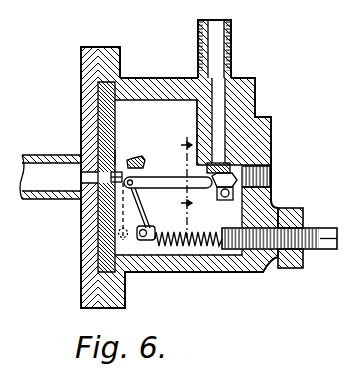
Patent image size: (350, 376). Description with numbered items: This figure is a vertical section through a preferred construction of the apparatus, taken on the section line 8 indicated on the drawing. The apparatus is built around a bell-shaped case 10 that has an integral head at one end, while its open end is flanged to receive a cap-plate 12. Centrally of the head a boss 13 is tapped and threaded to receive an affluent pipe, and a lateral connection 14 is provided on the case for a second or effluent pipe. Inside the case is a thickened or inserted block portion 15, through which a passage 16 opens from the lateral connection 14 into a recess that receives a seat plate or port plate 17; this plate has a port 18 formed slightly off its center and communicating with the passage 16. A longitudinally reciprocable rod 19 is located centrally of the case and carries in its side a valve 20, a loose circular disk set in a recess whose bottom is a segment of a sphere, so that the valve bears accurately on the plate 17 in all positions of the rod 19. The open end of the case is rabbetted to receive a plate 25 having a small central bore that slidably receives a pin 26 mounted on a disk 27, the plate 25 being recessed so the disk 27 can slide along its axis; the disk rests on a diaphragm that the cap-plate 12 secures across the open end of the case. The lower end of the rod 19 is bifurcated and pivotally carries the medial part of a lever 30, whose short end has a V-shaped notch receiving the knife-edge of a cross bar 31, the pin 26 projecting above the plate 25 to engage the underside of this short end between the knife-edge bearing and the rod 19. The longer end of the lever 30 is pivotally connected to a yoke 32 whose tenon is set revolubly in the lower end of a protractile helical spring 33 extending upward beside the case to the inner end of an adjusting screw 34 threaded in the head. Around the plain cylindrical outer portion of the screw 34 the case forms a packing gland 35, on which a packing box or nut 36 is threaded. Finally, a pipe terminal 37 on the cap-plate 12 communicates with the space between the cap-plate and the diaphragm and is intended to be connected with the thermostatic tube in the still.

The section line 8- 8 is at (184, 183).
The bell-shaped case 10 is at (243, 271).
The cap-plate 12 is at (89, 97).
The boss 13 is at (271, 196).
The lateral connection 14 is at (232, 61).
The thickened or inserted block portion 15 is at (193, 118).
The passage 16 is at (232, 126).
The seat plate or port plate 17 is at (240, 157).
The port 18 is at (218, 106).
The longitudinally reciprocable rod 19 is at (178, 178).
The valve 20 is at (218, 192).
The plate 25 is at (104, 117).
The pin 26 is at (121, 168).
The disk 27 is at (117, 158).
The lever 30 is at (143, 204).
The cross bar 31 is at (141, 162).
The yoke 32 is at (157, 243).
The protractile helical spring 33 is at (200, 248).
The adjusting screw 34 is at (316, 248).
The packing gland 35 is at (275, 259).
The packing box or nut 36 is at (292, 268).
The pipe terminal 37 is at (50, 187).